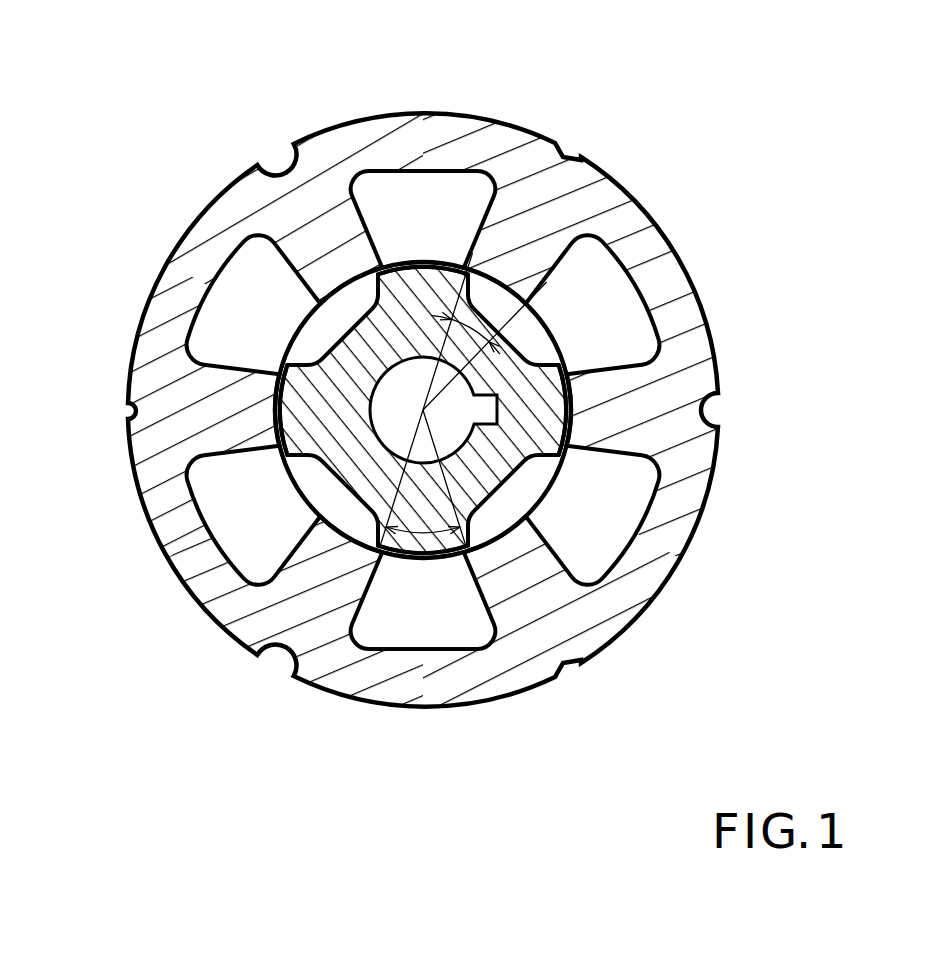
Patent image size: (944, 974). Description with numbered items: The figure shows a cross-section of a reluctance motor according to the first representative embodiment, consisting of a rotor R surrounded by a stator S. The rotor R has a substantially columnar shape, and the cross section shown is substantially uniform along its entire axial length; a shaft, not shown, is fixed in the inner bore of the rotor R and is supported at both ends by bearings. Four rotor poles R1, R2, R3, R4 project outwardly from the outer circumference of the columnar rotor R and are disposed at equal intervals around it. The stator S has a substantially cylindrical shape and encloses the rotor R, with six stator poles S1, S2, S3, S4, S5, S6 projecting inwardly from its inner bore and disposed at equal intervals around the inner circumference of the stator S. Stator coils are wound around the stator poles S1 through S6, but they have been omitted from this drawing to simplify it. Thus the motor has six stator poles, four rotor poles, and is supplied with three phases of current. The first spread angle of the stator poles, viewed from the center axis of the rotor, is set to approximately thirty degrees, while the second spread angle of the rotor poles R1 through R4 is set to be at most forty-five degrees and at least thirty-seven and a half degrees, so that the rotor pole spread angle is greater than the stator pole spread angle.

The stator S is at (686, 263).
The stator pole S1 is at (510, 264).
The stator pole S2 is at (609, 410).
The stator pole S3 is at (502, 558).
The stator pole S4 is at (344, 555).
The stator pole S5 is at (243, 410).
The stator pole S6 is at (344, 264).
The rotor R is at (549, 359).
The rotor pole R1 is at (437, 262).
The rotor pole R2 is at (278, 438).
The rotor pole R3 is at (425, 557).
The rotor pole R4 is at (562, 448).